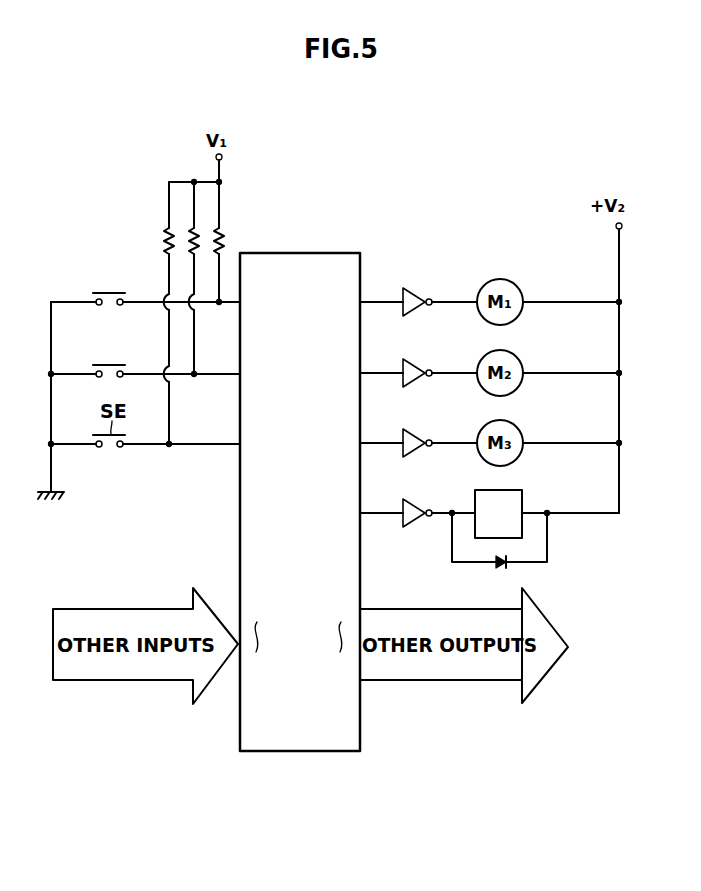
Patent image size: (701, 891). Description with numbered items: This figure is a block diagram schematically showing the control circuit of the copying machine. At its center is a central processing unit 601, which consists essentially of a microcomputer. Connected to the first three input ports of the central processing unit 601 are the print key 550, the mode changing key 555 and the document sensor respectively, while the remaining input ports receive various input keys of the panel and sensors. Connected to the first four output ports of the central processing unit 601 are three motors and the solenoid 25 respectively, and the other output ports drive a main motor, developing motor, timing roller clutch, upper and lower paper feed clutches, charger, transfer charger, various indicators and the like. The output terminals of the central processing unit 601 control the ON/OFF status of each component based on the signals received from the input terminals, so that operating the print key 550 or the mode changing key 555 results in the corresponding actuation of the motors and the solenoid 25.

The print key 550 is at (110, 292).
The mode changing key 555 is at (110, 364).
The solenoid 25 is at (522, 490).
The CPU 601 is at (293, 752).